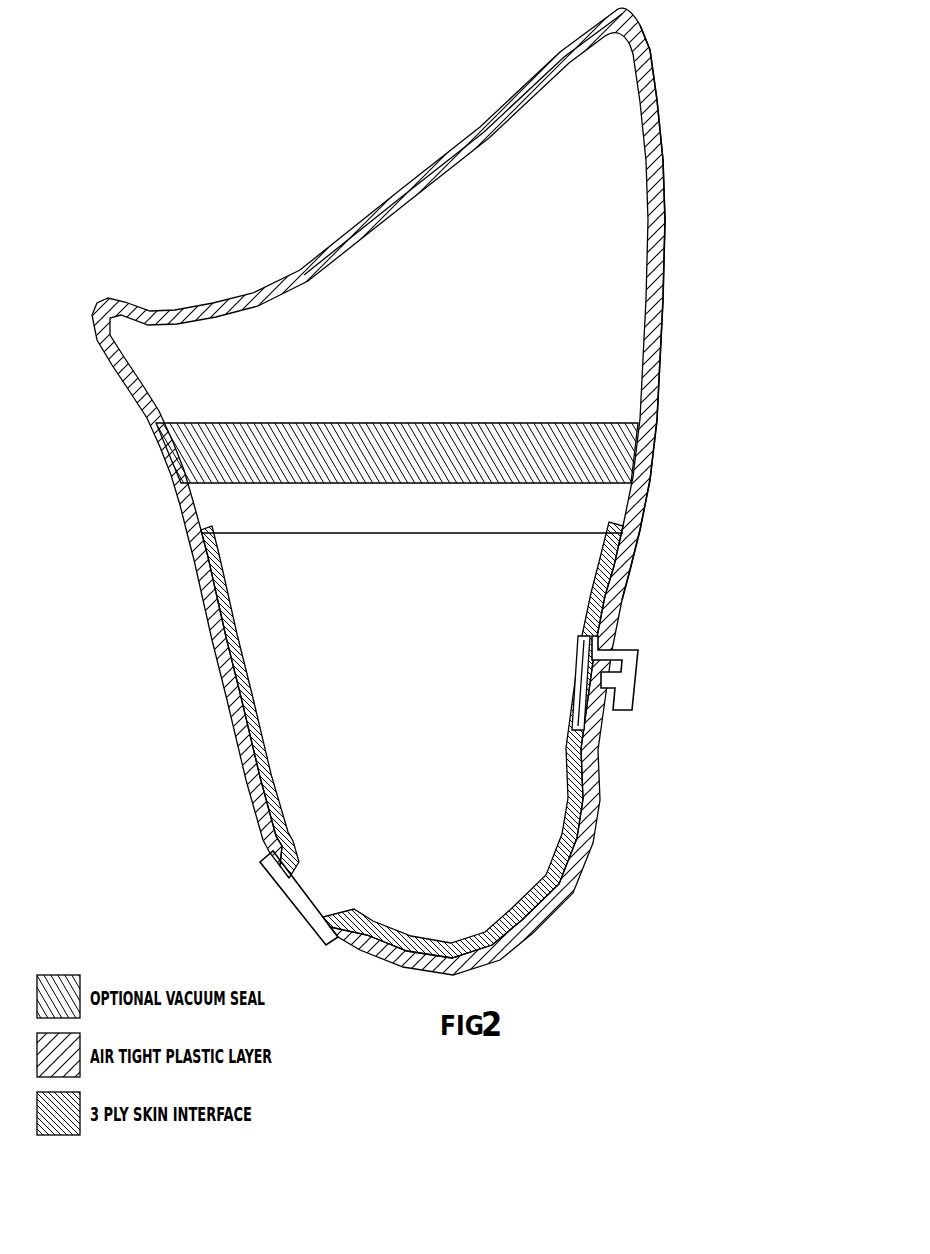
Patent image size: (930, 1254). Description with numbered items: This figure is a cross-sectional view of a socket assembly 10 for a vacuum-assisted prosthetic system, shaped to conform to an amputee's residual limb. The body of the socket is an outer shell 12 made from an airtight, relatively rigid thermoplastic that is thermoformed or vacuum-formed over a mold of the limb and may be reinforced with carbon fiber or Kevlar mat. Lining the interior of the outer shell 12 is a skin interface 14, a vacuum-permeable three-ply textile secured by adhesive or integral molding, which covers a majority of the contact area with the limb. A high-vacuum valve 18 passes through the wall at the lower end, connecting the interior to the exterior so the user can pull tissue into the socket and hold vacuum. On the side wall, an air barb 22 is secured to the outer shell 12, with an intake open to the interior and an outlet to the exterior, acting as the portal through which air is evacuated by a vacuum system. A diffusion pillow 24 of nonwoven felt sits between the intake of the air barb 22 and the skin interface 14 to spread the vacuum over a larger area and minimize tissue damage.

The socket assembly 10 is at (203, 212).
The outer shell 12 is at (665, 203).
The skin interface 14 is at (222, 612).
The high-vacuum valve 18 is at (276, 888).
The air barb 22 is at (638, 650).
The diffusion pillow 24 is at (584, 718).